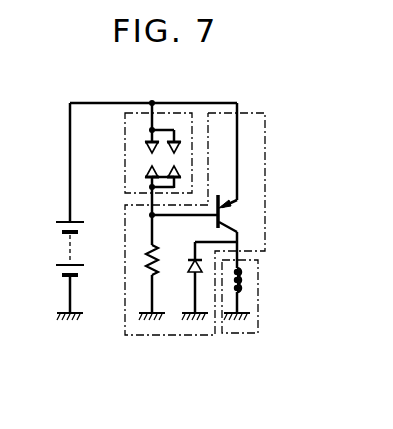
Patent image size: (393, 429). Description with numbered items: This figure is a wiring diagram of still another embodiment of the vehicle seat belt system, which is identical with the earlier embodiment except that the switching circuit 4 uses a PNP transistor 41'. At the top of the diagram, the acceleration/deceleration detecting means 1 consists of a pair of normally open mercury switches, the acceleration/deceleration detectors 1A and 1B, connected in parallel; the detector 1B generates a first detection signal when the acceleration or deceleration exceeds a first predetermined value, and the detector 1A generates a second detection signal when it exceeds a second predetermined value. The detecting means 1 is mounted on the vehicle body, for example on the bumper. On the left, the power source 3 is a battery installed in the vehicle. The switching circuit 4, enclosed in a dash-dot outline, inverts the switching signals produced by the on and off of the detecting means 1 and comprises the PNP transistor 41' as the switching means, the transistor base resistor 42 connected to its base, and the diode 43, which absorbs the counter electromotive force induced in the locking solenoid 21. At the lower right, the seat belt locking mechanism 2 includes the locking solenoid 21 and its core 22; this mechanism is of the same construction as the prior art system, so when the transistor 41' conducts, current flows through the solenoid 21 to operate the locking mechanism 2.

The acceleration/deceleration detecting means 1 is at (169, 128).
The acceleration/deceleration detector 1A is at (148, 158).
The acceleration/deceleration detector 1B is at (178, 159).
The seat belt locking mechanism 2 is at (262, 318).
The power source 3 is at (62, 250).
The switching circuit 4 is at (266, 123).
The PNP transistor 41' is at (262, 213).
The transistor base resistor 42 is at (147, 258).
The diode 43 is at (193, 267).
The locking solenoid 21 is at (244, 273).
The core 22 is at (242, 300).